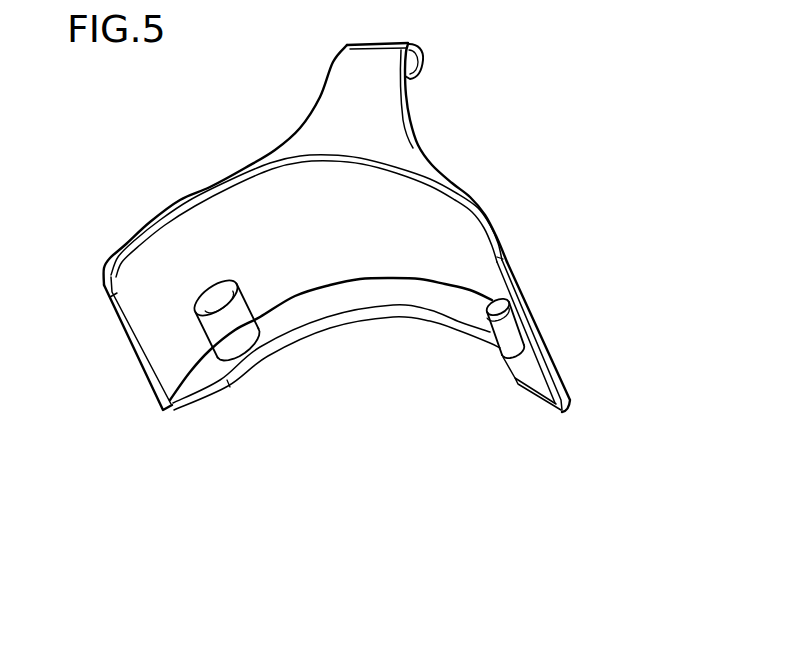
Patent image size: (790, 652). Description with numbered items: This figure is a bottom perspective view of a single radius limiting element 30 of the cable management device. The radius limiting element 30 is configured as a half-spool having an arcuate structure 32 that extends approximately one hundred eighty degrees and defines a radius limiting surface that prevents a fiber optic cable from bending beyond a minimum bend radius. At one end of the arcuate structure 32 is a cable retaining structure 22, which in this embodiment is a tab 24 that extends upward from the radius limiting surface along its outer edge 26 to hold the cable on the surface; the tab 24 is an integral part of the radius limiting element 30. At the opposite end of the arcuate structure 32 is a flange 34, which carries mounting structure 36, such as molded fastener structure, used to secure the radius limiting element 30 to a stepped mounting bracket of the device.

The cable retaining structure 22 is at (413, 40).
The tab 24 is at (347, 95).
The outer edge 26 is at (490, 210).
The radius limiting element 30 is at (483, 77).
The arcuate structure 32 is at (158, 212).
The flange 34 is at (408, 315).
The mounting structure 36 is at (503, 335).